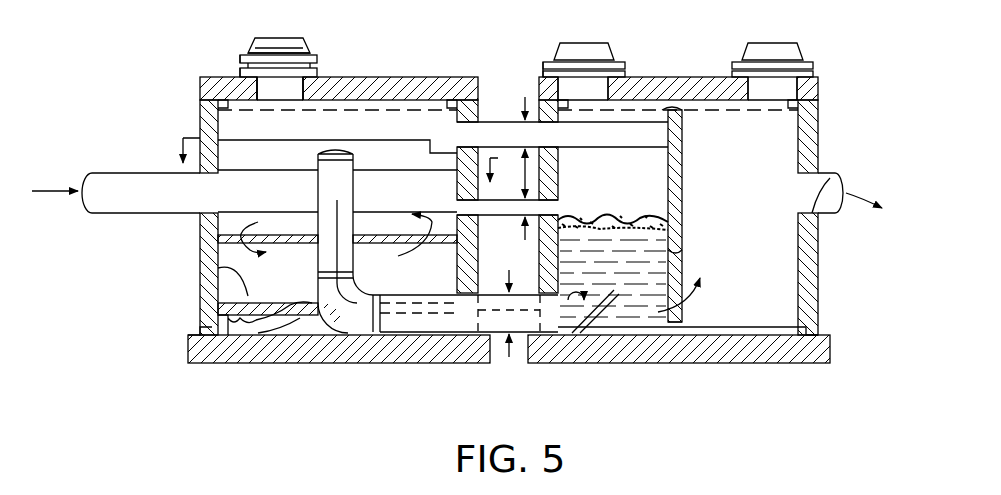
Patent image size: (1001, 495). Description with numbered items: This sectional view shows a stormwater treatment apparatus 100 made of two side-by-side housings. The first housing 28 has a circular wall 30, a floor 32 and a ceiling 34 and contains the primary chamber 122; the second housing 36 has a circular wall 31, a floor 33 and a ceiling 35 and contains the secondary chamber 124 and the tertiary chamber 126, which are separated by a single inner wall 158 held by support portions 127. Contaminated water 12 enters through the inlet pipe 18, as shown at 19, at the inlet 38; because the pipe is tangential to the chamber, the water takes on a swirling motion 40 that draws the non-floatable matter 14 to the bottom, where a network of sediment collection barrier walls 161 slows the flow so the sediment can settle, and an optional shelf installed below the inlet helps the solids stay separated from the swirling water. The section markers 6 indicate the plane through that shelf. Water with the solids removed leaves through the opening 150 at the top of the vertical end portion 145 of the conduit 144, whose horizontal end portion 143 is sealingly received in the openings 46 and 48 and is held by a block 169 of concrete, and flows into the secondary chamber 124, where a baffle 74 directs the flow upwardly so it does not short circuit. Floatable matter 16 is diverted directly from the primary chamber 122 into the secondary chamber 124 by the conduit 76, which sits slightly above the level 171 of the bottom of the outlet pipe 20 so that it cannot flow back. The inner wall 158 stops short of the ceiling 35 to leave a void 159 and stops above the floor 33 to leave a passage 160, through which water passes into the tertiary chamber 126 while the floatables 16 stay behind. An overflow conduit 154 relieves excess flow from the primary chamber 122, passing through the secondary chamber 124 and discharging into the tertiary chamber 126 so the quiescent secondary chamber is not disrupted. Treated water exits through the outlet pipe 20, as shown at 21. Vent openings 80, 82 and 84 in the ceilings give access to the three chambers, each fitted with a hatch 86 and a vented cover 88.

The section line 6- 6 is at (349, 168).
The water 12 is at (613, 278).
The non-floatable matter 14 is at (277, 322).
The floatable matter 16 is at (618, 215).
The inlet pipe 18 is at (108, 173).
The inflow of contaminated water 19 is at (42, 191).
The outlet pipe 20 is at (832, 214).
The discharge of treated water 21 is at (868, 192).
The housing 28 is at (311, 193).
The circular wall 30 is at (198, 330).
The circular wall 31 is at (813, 146).
The floor 32 is at (368, 350).
The floor 33 is at (560, 350).
The ceiling 34 is at (205, 88).
The ceiling 35 is at (660, 84).
The housing 36 is at (820, 94).
The inlet 38 is at (200, 178).
The swirling motion 40 is at (337, 252).
The opening 46 is at (452, 338).
The opening 48 is at (530, 340).
The baffle 74 is at (612, 303).
The conduit 76 is at (495, 218).
The opening 80 is at (305, 89).
The vent opening 82 is at (610, 86).
The vent opening 84 is at (760, 62).
The hatch 86 is at (278, 85).
The vented cover 88 is at (270, 34).
The stormwater treatment apparatus 100 is at (828, 58).
The primary chamber 122 is at (402, 270).
The secondary chamber 124 is at (592, 160).
The tertiary chamber 126 is at (742, 195).
The support portions 127 is at (677, 330).
The horizontal end portion 143 is at (400, 318).
The conduit 144 is at (331, 211).
The vertical end portion 145 is at (333, 187).
The opening 150 is at (340, 152).
The overflow conduit 154 is at (680, 150).
The inner wall 158 is at (682, 252).
The void 159 is at (678, 115).
The passage 160 is at (702, 295).
The network of sediment collection barrier walls 161 is at (234, 320).
The block 169 is at (320, 318).
The level 171 is at (828, 198).